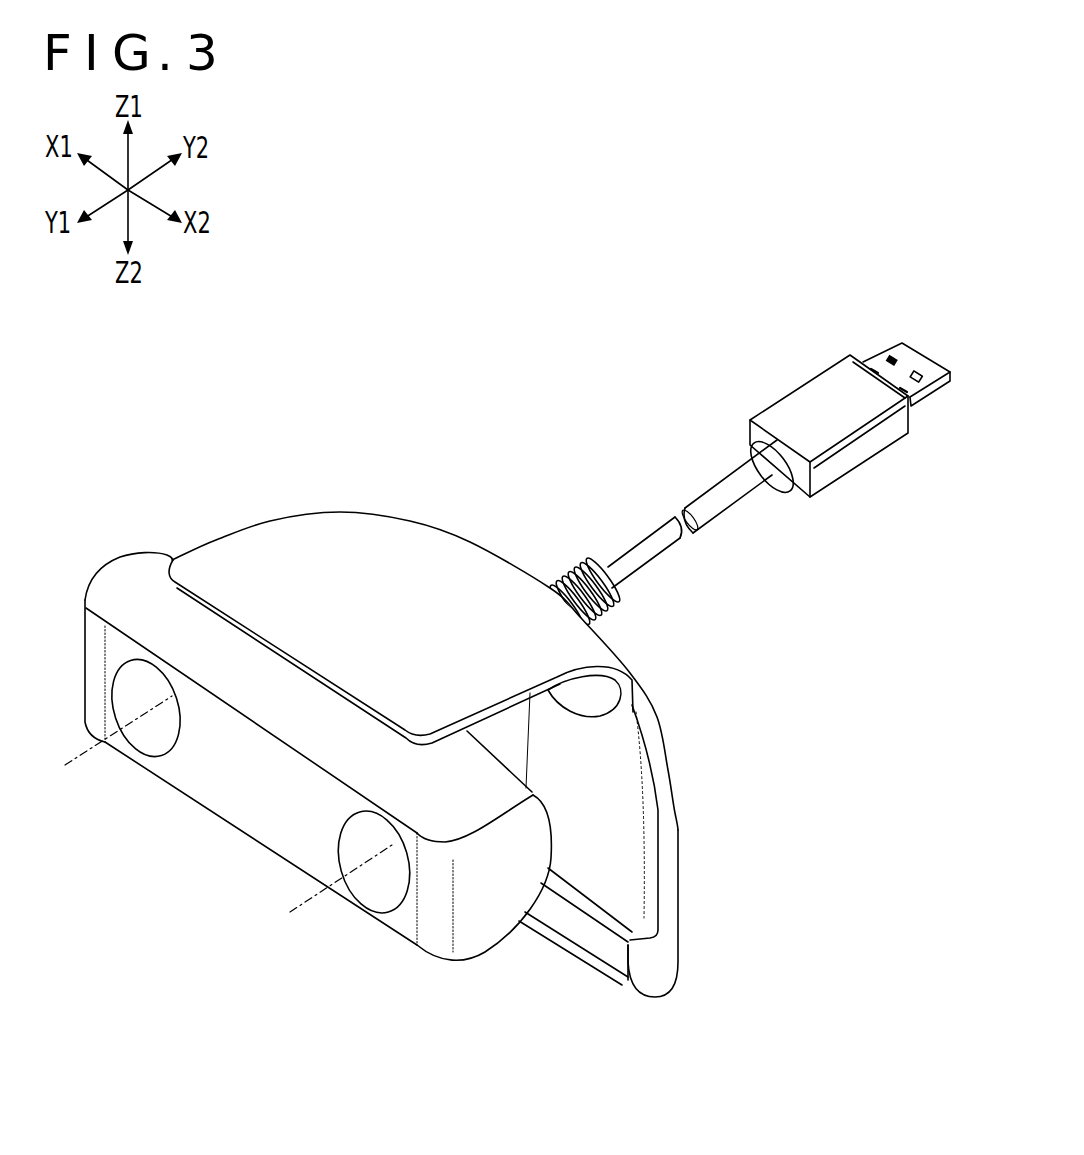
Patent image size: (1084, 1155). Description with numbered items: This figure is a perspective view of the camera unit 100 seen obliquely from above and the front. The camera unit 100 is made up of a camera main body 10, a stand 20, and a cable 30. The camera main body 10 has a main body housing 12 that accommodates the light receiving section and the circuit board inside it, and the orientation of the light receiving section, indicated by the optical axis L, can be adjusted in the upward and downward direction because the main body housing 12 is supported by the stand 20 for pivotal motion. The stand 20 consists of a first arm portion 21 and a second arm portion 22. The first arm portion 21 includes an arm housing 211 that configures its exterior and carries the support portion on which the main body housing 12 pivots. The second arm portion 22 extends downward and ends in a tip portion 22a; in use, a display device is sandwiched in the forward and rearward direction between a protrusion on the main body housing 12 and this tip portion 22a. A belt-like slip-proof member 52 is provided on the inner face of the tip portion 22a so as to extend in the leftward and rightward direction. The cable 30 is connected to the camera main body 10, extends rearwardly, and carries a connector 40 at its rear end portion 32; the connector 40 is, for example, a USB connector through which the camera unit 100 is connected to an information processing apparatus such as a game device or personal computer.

The camera unit 100 is at (441, 458).
The camera main body 10 is at (120, 553).
The main body housing 12 is at (195, 800).
The optical axis L is at (217, 817).
The stand 20 is at (366, 507).
The first arm portion 21 is at (265, 552).
The arm housing 211 is at (465, 538).
The second arm portion 22 is at (676, 763).
The tip portion 22a is at (665, 967).
The slip-proof member 52 is at (610, 943).
The cable 30 is at (704, 484).
The rear end portion 32 is at (808, 385).
The connector 40 is at (918, 342).